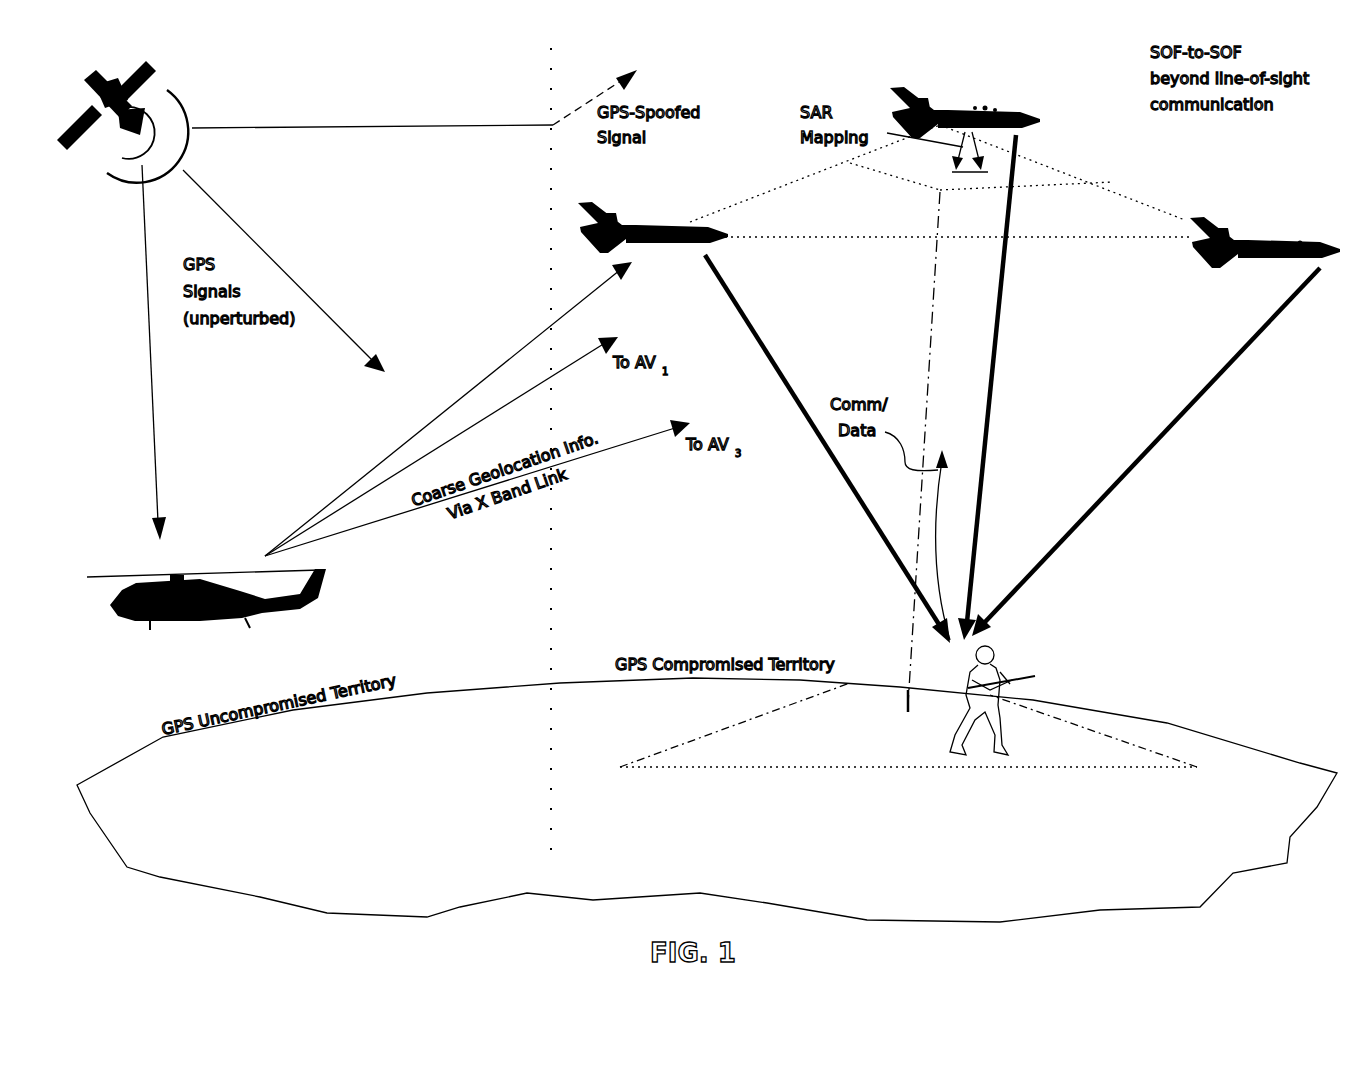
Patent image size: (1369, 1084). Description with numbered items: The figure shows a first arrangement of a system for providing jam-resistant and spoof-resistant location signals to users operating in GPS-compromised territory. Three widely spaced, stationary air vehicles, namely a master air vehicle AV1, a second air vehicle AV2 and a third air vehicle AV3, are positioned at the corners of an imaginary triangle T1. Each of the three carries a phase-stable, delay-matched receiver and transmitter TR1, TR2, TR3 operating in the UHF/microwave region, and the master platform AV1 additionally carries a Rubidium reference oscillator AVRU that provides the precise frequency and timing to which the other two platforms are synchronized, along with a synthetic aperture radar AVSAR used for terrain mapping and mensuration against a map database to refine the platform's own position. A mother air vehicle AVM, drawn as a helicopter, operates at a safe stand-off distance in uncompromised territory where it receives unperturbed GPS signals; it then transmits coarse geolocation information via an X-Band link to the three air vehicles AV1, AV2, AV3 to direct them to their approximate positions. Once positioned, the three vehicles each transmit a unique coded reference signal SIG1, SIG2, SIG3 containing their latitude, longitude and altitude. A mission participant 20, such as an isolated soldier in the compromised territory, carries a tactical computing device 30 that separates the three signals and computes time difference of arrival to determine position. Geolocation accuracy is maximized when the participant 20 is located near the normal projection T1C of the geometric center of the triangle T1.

The mission participant 20 is at (991, 700).
The tactical computing device 30 is at (960, 670).
The mother air vehicle platform AVM is at (130, 620).
The master air vehicle platform AV1 is at (1042, 125).
The second air vehicle platform AV2 is at (697, 250).
The third air vehicle platform AV3 is at (1210, 268).
The receiver and transmitter TR1 is at (1135, 50).
The receiver and transmitter TR2 is at (675, 228).
The receiver and transmitter TR3 is at (1300, 240).
The synthetic aperture radar AVSAR is at (973, 104).
The Rubidium reference oscillator AVRU is at (996, 107).
The first coded reference signal SIG1 is at (993, 372).
The second coded reference signal SIG2 is at (838, 470).
The third coded reference signal SIG3 is at (1155, 443).
The imaginary triangle T1 is at (1113, 183).
The normal projection of the geometric center of the triangle T1C is at (900, 709).